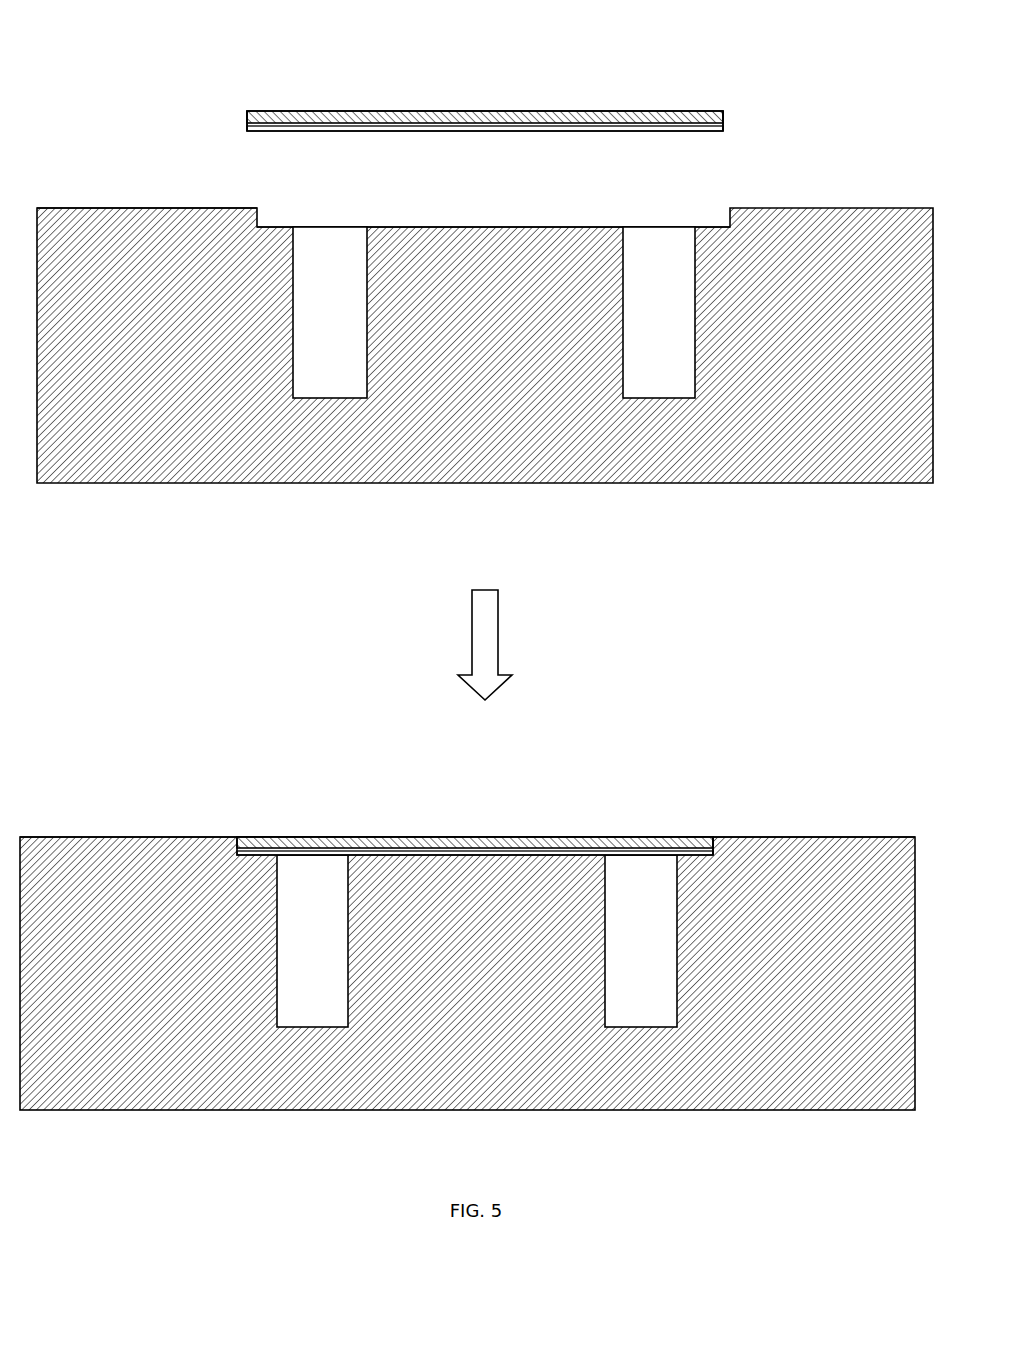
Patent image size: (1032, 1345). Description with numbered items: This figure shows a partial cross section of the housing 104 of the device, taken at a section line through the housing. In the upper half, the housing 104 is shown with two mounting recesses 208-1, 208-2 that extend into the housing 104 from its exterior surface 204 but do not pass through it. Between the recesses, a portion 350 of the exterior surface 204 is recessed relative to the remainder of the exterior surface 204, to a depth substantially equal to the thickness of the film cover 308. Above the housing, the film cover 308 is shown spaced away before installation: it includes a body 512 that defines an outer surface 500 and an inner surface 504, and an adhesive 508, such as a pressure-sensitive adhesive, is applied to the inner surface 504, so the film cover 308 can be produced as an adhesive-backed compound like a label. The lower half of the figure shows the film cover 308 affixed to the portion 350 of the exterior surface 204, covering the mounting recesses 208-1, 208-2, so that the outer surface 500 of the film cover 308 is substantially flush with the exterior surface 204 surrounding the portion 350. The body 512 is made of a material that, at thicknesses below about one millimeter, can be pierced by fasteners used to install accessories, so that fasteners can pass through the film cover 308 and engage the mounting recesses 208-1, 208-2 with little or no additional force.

The housing 104 is at (814, 418).
The exterior surface 204 is at (157, 208).
The mounting recess 208-1 is at (302, 323).
The mounting recess 208-2 is at (631, 323).
The film cover 308 is at (737, 108).
The portion 350 is at (410, 227).
The outer surface 500 is at (437, 437).
The inner surface 504 is at (481, 123).
The adhesive 508 is at (602, 132).
The body 512 is at (246, 114).